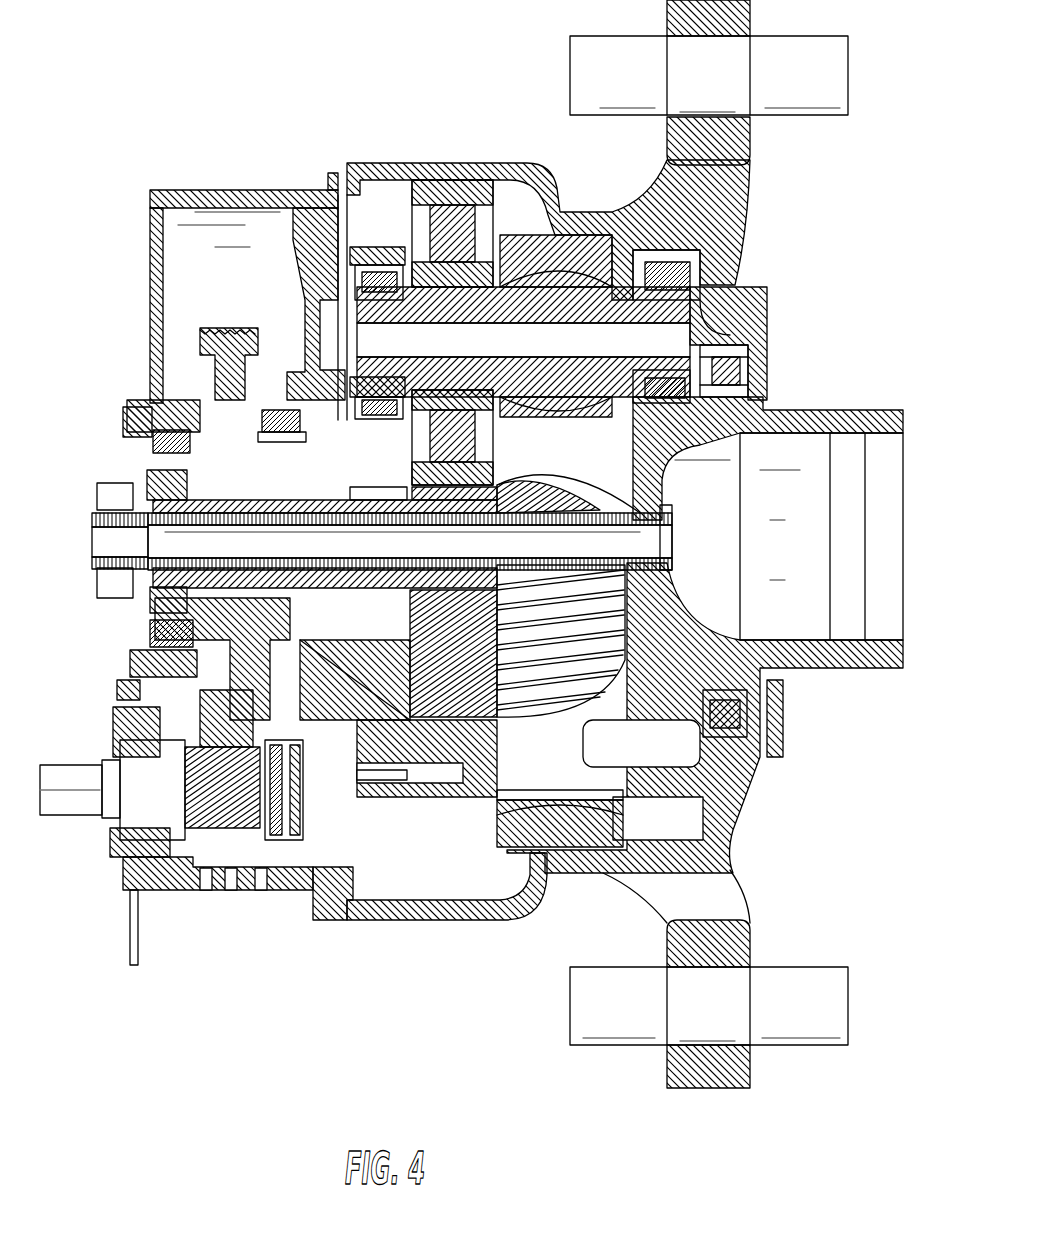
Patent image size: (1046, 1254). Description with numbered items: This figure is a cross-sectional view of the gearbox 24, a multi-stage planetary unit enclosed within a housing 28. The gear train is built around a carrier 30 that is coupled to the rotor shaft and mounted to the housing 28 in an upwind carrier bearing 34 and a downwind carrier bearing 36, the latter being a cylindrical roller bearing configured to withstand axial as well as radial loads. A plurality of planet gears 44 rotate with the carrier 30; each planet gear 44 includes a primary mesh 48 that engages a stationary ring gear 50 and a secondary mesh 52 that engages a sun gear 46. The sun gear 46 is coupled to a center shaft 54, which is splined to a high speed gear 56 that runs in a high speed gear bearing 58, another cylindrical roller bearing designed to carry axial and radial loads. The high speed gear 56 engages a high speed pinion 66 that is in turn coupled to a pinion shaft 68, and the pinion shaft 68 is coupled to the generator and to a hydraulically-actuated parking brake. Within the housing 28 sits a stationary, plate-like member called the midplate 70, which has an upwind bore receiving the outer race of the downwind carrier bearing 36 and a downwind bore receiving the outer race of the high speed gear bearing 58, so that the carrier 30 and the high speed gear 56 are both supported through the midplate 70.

The gearbox 24 is at (191, 73).
The housing 28 is at (158, 203).
The carrier 30 is at (818, 412).
The upwind carrier bearing 34 is at (745, 370).
The downwind carrier bearing 36 is at (288, 760).
The planet gear 44 is at (700, 298).
The sun gear 46 is at (500, 510).
The primary mesh 48 is at (618, 250).
The ring gear 50 is at (555, 238).
The secondary mesh 52 is at (450, 200).
The center shaft 54 is at (130, 617).
The high speed gear 56 is at (205, 347).
The high speed gear bearing 58 is at (272, 410).
The high speed pinion 66 is at (220, 795).
The pinion shaft 68 is at (68, 795).
The midplate 70 is at (315, 285).